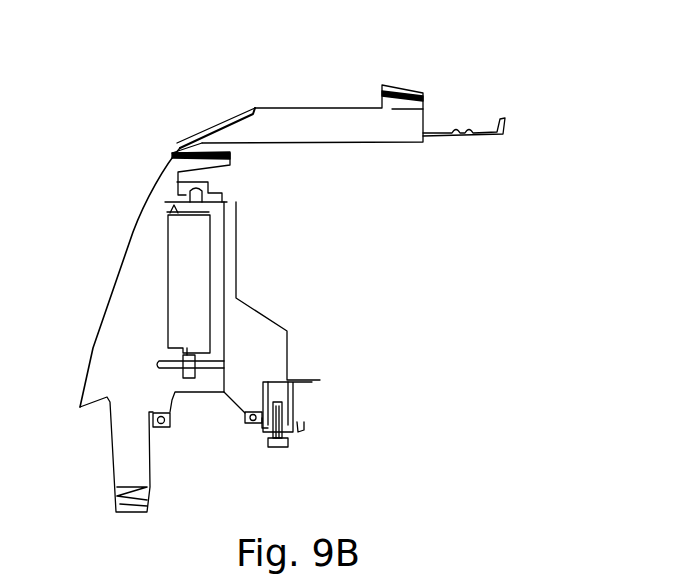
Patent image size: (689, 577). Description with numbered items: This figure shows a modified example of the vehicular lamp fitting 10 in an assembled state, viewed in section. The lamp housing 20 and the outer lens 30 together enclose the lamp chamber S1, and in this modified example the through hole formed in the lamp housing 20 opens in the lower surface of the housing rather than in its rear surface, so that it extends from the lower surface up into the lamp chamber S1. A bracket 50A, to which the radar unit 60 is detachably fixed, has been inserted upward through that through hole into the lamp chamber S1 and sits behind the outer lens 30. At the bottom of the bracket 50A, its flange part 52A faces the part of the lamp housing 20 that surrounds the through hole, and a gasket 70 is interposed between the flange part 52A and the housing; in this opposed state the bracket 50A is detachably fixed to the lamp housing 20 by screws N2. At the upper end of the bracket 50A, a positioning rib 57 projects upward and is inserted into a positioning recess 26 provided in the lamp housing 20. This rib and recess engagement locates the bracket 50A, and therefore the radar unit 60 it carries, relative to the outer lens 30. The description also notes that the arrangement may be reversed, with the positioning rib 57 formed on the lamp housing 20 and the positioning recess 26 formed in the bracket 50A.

The vehicular lamp fitting 10 is at (240, 70).
The lamp housing 20 is at (238, 250).
The positioning recess 26 is at (177, 183).
The outer lens 30 is at (118, 270).
The bracket 50A is at (227, 355).
The flange part 52A is at (160, 430).
The positioning rib 57 is at (212, 197).
The radar unit 60 is at (168, 328).
The gasket 70 is at (148, 425).
The screws N2 is at (275, 450).
The lamp chamber S1 is at (153, 307).